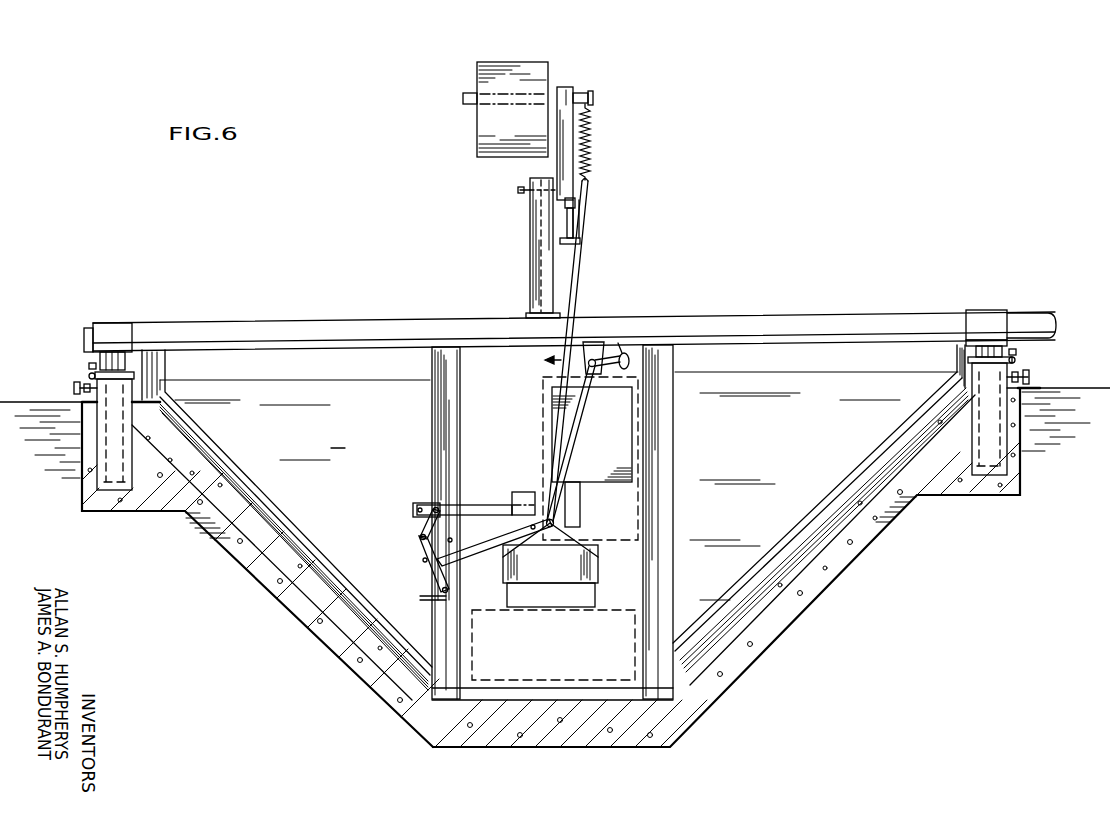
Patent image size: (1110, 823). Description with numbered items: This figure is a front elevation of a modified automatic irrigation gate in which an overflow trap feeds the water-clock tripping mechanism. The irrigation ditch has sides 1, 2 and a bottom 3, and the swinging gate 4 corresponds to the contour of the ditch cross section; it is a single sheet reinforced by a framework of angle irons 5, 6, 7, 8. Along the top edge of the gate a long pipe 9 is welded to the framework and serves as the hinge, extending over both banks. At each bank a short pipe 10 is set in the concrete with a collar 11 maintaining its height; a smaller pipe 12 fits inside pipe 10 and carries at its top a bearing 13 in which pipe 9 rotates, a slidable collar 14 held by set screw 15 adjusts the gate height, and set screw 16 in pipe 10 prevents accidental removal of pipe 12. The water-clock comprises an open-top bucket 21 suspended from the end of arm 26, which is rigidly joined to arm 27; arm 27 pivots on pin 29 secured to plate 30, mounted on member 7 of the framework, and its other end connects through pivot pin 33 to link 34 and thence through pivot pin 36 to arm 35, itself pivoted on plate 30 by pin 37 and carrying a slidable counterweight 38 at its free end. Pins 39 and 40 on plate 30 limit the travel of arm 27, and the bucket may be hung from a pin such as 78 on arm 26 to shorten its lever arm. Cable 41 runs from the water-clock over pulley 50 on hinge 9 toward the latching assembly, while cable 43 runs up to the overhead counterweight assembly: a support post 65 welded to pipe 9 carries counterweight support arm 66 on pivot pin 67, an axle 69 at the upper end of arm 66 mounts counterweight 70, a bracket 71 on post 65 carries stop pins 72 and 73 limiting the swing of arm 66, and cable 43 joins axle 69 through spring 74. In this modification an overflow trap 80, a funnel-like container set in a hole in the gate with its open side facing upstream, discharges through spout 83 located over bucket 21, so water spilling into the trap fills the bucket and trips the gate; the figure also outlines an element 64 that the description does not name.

The ditch side 1 is at (318, 638).
The ditch side 2 is at (770, 632).
The ditch bottom 3 is at (535, 748).
The swinging gate 4 is at (338, 437).
The angle iron 5 is at (780, 490).
The angle iron 6 is at (667, 446).
The angle iron 7 is at (430, 425).
The angle iron 8 is at (228, 466).
The hinge pipe 9 is at (803, 318).
The short pipe 10 is at (97, 473).
The collar 11 is at (90, 398).
The inner pipe 12 is at (98, 355).
The bearing 13 is at (112, 323).
The slidable collar 14 is at (93, 366).
The set screw 15 is at (92, 375).
The set screw 16 is at (76, 386).
The bucket 21 is at (598, 575).
The arm 26 is at (456, 562).
The arm 27 is at (441, 590).
The pin 29 is at (426, 602).
The plate 30 is at (420, 573).
The pivot pin 33 is at (420, 538).
The link 34 is at (413, 516).
The arm 35 is at (464, 505).
The pivot pin 36 is at (430, 500).
The pin 37 is at (413, 506).
The slidable counterweight 38 is at (520, 492).
The pin 39 is at (422, 560).
The pin 40 is at (456, 534).
The cable 41 is at (576, 414).
The cable 43 is at (577, 288).
The pulley 50 is at (600, 364).
The lower chamber 64 is at (628, 674).
The support post 65 is at (530, 258).
The counterweight support arm 66 is at (557, 160).
The pivot pin 67 is at (520, 190).
The axle 69 is at (463, 98).
The counterweight 70 is at (502, 62).
The bracket 71 is at (575, 222).
The stop pin 72 is at (577, 204).
The stop pin 73 is at (581, 241).
The spring 74 is at (592, 120).
The pin 78 is at (540, 530).
The overflow trap 80 is at (547, 398).
The spout 83 is at (580, 518).